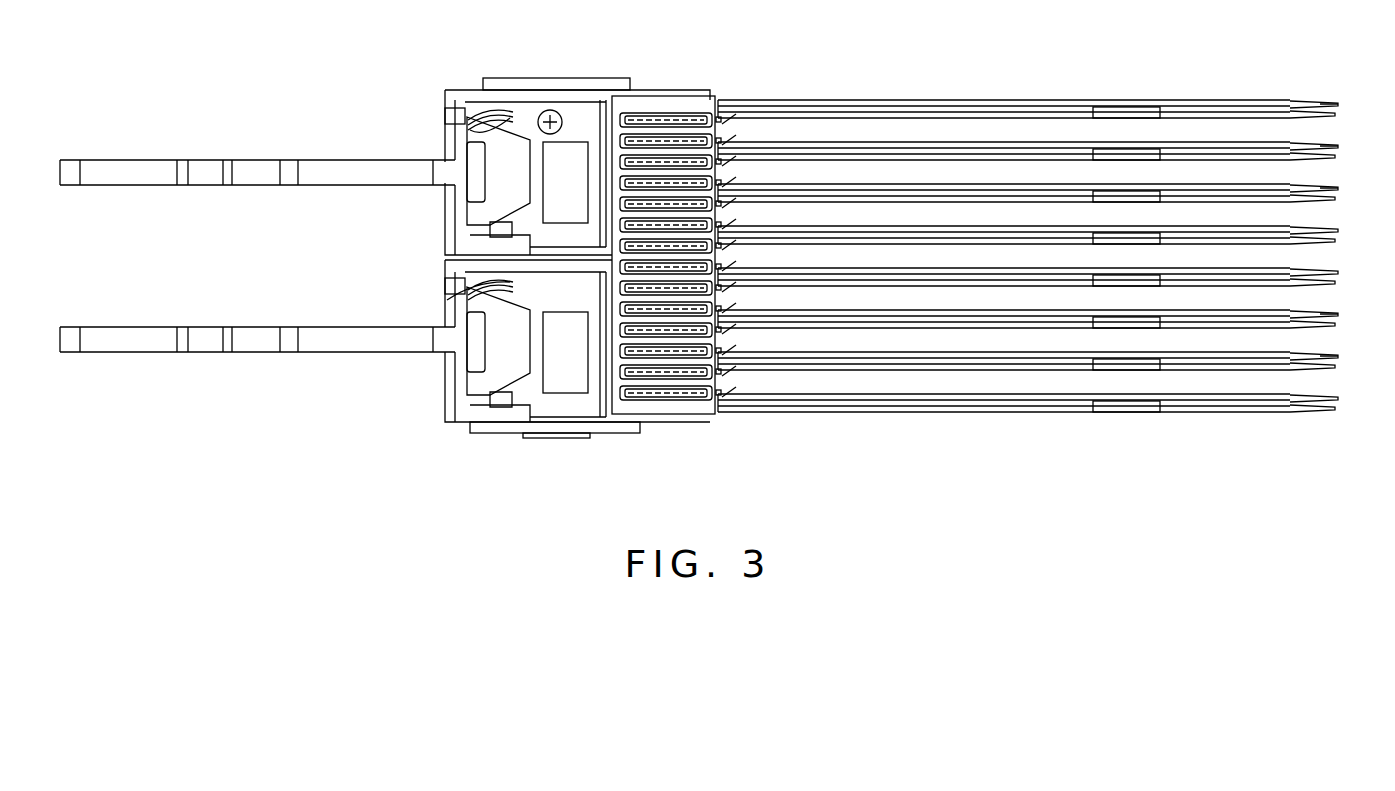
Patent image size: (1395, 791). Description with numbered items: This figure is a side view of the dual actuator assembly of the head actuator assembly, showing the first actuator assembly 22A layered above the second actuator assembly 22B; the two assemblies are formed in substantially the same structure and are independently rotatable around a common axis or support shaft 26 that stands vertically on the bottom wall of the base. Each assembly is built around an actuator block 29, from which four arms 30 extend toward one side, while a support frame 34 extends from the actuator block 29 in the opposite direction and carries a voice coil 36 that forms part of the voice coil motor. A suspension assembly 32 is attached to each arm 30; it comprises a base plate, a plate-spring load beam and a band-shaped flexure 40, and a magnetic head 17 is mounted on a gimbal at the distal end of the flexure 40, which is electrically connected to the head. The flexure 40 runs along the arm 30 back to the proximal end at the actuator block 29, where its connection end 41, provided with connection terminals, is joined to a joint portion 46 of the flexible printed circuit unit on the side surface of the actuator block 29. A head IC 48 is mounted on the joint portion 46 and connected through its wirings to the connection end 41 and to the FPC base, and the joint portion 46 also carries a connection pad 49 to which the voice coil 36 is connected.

The magnetic head 17 is at (1356, 127).
The first actuator assembly 22A is at (984, 37).
The second actuator assembly 22B is at (978, 483).
The common axis (support shaft) 26 is at (546, 440).
The actuator block 29 is at (640, 98).
The arm 30 is at (901, 232).
The suspension assembly 32 is at (1221, 138).
The support frame 34 is at (328, 158).
The voice coil 36 is at (251, 158).
The flexure 40 is at (1140, 108).
The connection end 41 is at (701, 122).
The joint portion 46 is at (530, 118).
The head IC 48 is at (568, 150).
The connection pad 49 is at (505, 102).